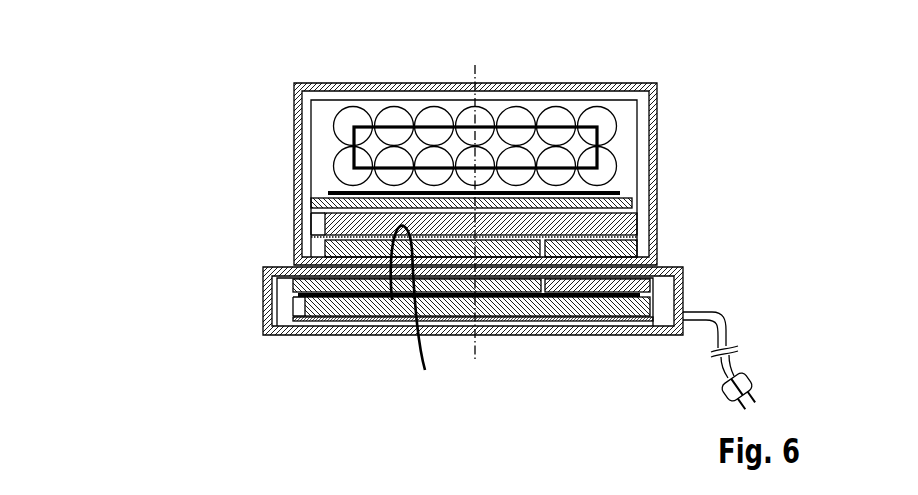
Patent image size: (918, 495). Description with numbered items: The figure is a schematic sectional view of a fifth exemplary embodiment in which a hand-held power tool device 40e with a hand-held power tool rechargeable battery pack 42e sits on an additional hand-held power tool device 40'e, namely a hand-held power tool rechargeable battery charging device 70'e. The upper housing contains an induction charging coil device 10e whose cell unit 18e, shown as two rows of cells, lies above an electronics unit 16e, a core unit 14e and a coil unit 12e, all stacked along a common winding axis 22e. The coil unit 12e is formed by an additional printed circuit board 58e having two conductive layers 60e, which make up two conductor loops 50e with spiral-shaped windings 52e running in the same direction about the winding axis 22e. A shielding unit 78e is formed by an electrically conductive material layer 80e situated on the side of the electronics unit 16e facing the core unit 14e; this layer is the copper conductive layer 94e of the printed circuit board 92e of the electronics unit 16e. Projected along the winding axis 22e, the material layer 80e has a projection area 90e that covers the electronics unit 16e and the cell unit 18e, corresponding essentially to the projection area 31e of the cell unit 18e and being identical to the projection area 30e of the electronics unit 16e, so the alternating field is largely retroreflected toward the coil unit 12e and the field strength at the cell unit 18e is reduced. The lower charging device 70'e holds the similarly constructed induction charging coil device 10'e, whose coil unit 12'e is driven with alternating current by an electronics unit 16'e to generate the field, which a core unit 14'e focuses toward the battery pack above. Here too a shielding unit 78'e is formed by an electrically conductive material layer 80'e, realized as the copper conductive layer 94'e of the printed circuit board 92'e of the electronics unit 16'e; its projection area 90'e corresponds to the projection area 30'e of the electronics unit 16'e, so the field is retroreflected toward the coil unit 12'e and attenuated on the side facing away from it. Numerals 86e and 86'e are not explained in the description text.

The induction charging coil device 10e is at (648, 77).
The induction charging coil device 10'e is at (462, 307).
The coil unit 12e is at (628, 249).
The coil unit 12'e is at (656, 283).
The core unit 14e is at (322, 219).
The core unit 14'e is at (417, 338).
The electronics unit 16e is at (340, 189).
The electronics unit 16'e is at (451, 345).
The cell unit 18e is at (636, 118).
The winding axis 22e is at (475, 65).
The projection area 30e is at (590, 193).
The projection area 30'e is at (342, 296).
The projection area 31e is at (349, 188).
The hand-held power tool device 40e is at (519, 142).
The hand-held power tool device 40'e is at (462, 307).
The hand-held power tool rechargeable battery pack 42e is at (519, 142).
The conductor loops 50e is at (420, 311).
The windings 52e is at (583, 218).
The additional printed circuit board 58e is at (333, 248).
The conductive layers 60e is at (357, 238).
The hand-held power tool rechargeable battery charging device 70'e is at (707, 367).
The shielding unit 78e is at (590, 193).
The shielding unit 78'e is at (342, 296).
The electrically conductive material layer 80e is at (590, 193).
The electrically conductive material layer 80'e is at (342, 296).
The heat distributing layer 86e is at (590, 193).
The heat distributing layer of second module 86'e is at (342, 296).
The projection area 90e is at (612, 205).
The projection area 90'e is at (342, 296).
The printed circuit board 92e is at (590, 222).
The printed circuit board 92'e is at (625, 353).
The conductive layer 94e is at (590, 193).
The conductive layer 94'e is at (342, 296).